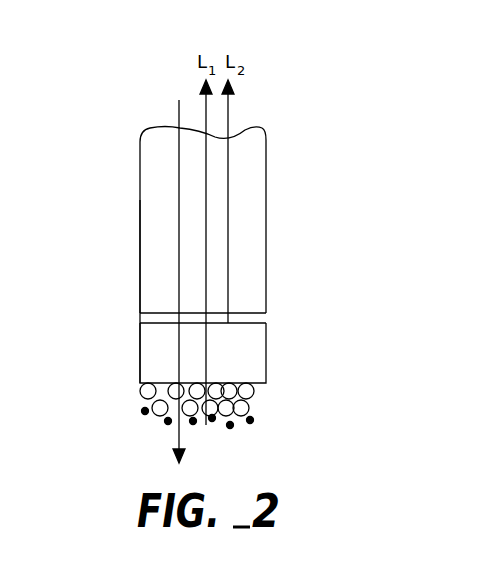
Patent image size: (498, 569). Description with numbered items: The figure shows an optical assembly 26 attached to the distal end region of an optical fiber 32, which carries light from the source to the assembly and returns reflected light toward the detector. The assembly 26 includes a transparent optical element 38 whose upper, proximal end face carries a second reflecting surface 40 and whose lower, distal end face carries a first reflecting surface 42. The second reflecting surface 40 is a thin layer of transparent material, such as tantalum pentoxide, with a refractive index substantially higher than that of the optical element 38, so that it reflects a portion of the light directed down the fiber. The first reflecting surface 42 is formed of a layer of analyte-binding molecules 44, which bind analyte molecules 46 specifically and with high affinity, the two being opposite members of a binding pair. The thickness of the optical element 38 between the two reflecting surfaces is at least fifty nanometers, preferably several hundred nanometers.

The optical assembly 26 is at (128, 350).
The optical fiber 32 is at (255, 221).
The transparent optical element 38 is at (258, 359).
The second reflecting surface 40 is at (266, 316).
The first reflecting surface 42 is at (253, 397).
The analyte-binding molecules 44 is at (163, 414).
The analyte molecules 46 is at (208, 424).